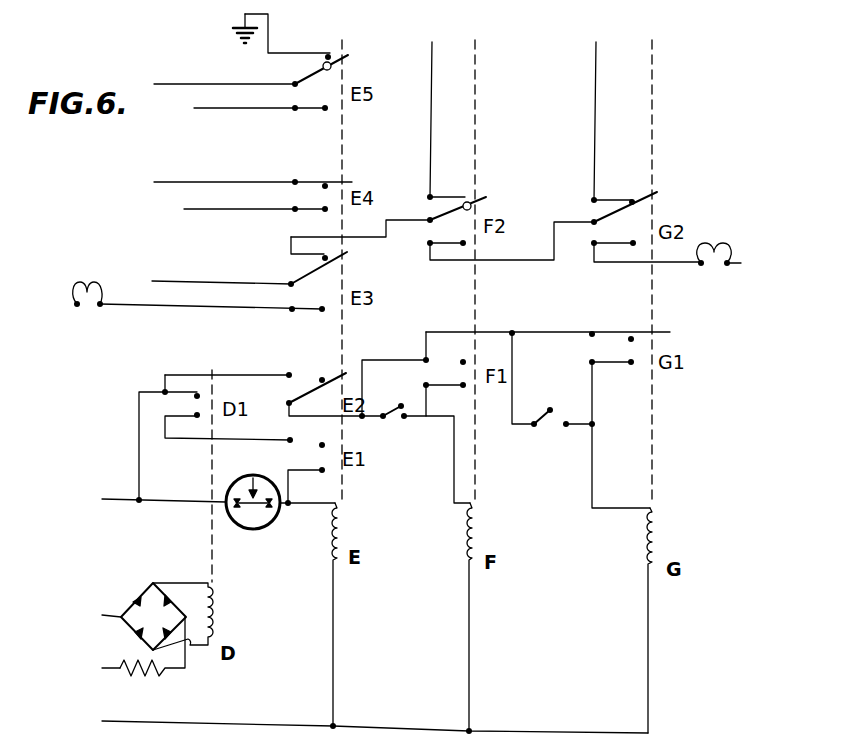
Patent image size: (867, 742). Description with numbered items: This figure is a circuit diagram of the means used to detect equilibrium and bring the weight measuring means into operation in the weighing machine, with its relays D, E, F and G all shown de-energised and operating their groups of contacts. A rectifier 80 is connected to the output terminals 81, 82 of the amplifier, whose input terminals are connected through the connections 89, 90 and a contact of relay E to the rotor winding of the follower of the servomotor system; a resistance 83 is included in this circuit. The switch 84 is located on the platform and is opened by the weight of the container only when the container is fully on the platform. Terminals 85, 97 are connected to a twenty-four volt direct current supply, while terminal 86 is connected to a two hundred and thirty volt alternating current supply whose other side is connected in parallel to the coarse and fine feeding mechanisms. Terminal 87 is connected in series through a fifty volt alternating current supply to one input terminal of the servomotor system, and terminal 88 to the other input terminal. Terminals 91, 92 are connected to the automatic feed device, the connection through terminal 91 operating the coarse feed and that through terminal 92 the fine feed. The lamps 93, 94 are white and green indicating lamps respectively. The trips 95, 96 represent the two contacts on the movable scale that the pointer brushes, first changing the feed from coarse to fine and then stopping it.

The rectifier 80 is at (153, 616).
The output terminal of the amplifier 81 is at (97, 614).
The output terminal of the amplifier 82 is at (97, 668).
The resistance 83 is at (148, 676).
The switch 84 is at (280, 516).
The terminal 85 is at (150, 498).
The terminal 86 is at (207, 280).
The terminal 87 is at (242, 209).
The terminal 88 is at (239, 182).
The amplifier input connection 89 is at (247, 108).
The amplifier input connection 90 is at (210, 84).
The terminal 91 is at (441, 107).
The terminal 92 is at (608, 109).
The white indicating lamp 93 is at (199, 309).
The green indicating lamp 94 is at (667, 269).
The trip 95 is at (392, 425).
The trip 96 is at (553, 392).
The terminal 97 is at (361, 720).